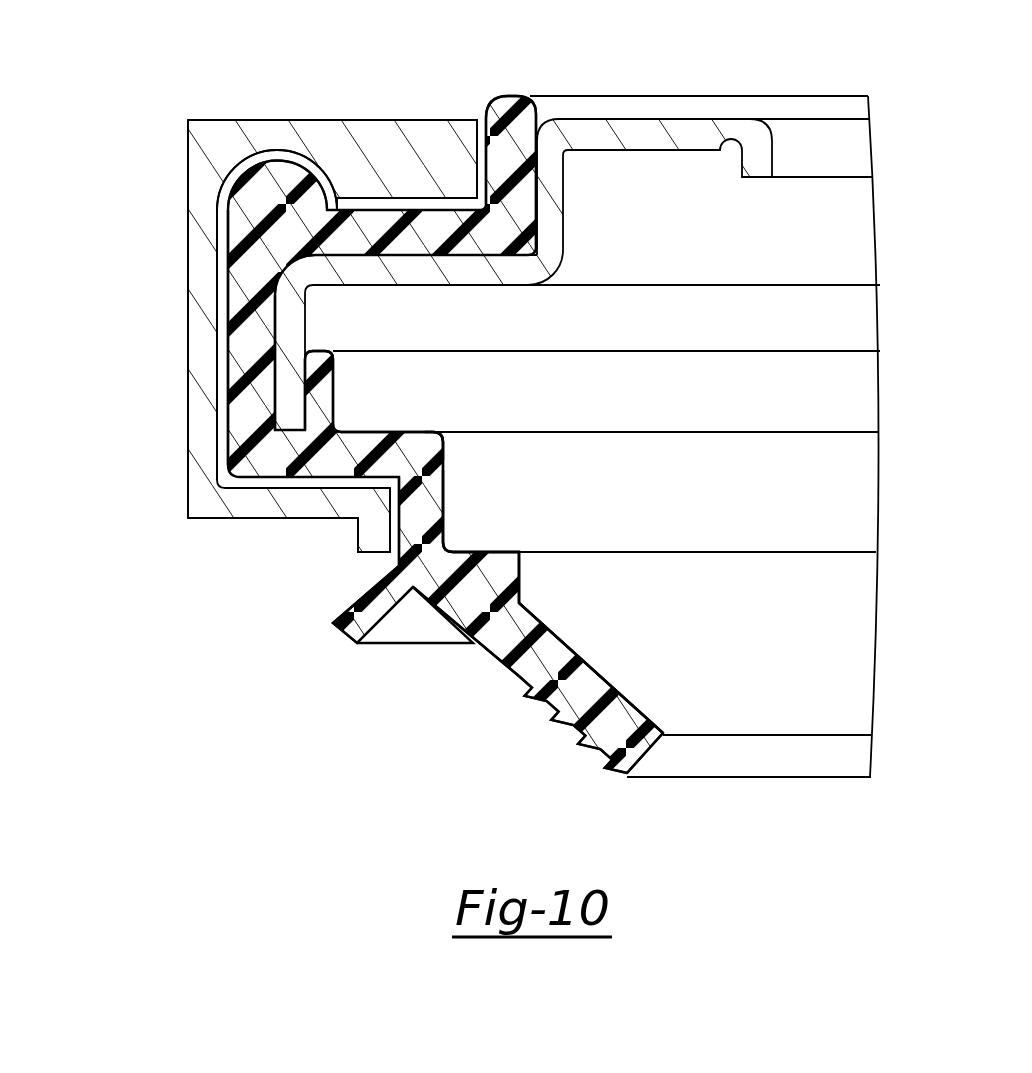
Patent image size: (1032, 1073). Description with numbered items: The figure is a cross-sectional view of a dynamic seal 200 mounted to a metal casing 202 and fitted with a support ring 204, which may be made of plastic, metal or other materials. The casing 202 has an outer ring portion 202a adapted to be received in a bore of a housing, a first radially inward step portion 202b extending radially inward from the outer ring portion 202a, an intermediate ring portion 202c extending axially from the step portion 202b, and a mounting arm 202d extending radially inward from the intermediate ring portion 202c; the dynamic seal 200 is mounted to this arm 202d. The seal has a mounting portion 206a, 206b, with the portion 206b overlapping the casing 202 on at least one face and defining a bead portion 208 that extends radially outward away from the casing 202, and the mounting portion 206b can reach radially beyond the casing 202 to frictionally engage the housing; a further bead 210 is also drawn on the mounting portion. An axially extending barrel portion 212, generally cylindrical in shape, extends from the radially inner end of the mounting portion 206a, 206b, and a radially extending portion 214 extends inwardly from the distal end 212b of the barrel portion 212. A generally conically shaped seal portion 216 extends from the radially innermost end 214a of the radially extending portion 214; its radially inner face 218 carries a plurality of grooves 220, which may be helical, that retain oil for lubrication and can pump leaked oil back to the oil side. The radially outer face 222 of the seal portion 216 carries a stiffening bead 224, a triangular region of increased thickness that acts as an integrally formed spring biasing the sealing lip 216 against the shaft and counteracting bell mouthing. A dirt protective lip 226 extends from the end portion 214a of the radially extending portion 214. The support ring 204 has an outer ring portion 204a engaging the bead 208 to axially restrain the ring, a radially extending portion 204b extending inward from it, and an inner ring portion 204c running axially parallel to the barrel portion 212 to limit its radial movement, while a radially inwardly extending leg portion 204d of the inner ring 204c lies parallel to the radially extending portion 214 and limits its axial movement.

The dynamic seal 200 is at (578, 573).
The metal casing 202 is at (798, 142).
The outer ring portion 202a is at (648, 128).
The first radially inward step portion 202b is at (550, 182).
The intermediate ring portion 202c is at (473, 270).
The mounting arm 202d is at (286, 377).
The support ring 204 is at (193, 515).
The outer ring portion 204a is at (355, 142).
The radially extending portion 204b is at (207, 398).
The inner ring portion 204c is at (267, 500).
The radially inwardly extending leg portion 204d is at (380, 527).
The mounting portion 206a is at (334, 390).
The mounting portion 206b is at (215, 295).
The bead portion 208 is at (274, 176).
The elastomer bead 210 is at (508, 114).
The axially extending barrel portion 212 is at (425, 436).
The distal end 212b is at (437, 450).
The radially extending portion 214 is at (447, 500).
The radially innermost end 214a is at (378, 566).
The conically shaped seal portion 216 is at (553, 650).
The radially inner face 218 is at (473, 650).
The grooves 220 is at (550, 713).
The radially outer face 222 is at (660, 713).
The stiffening bead 224 is at (513, 556).
The dirt protective lip 226 is at (373, 628).